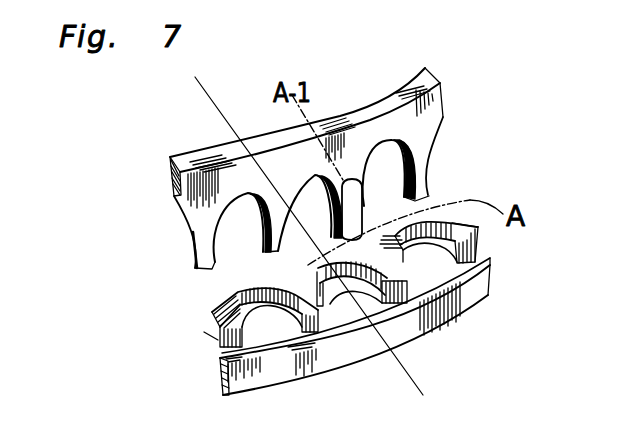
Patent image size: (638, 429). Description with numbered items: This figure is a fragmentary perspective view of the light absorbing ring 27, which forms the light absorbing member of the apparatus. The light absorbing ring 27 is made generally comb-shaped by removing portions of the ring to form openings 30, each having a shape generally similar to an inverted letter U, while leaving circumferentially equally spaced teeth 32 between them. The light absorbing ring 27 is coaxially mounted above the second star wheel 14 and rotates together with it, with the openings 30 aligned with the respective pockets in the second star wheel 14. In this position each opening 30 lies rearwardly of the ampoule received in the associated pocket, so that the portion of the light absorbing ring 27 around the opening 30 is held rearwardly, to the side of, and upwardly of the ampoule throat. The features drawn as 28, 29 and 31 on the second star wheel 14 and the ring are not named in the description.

The second star wheel 14 is at (316, 325).
The light absorbing ring 27 is at (309, 174).
The arcuate projection 28 is at (267, 320).
The base web 29 is at (405, 373).
The openings 30 is at (230, 250).
The bridge portion 31 is at (359, 113).
The teeth 32 is at (205, 245).